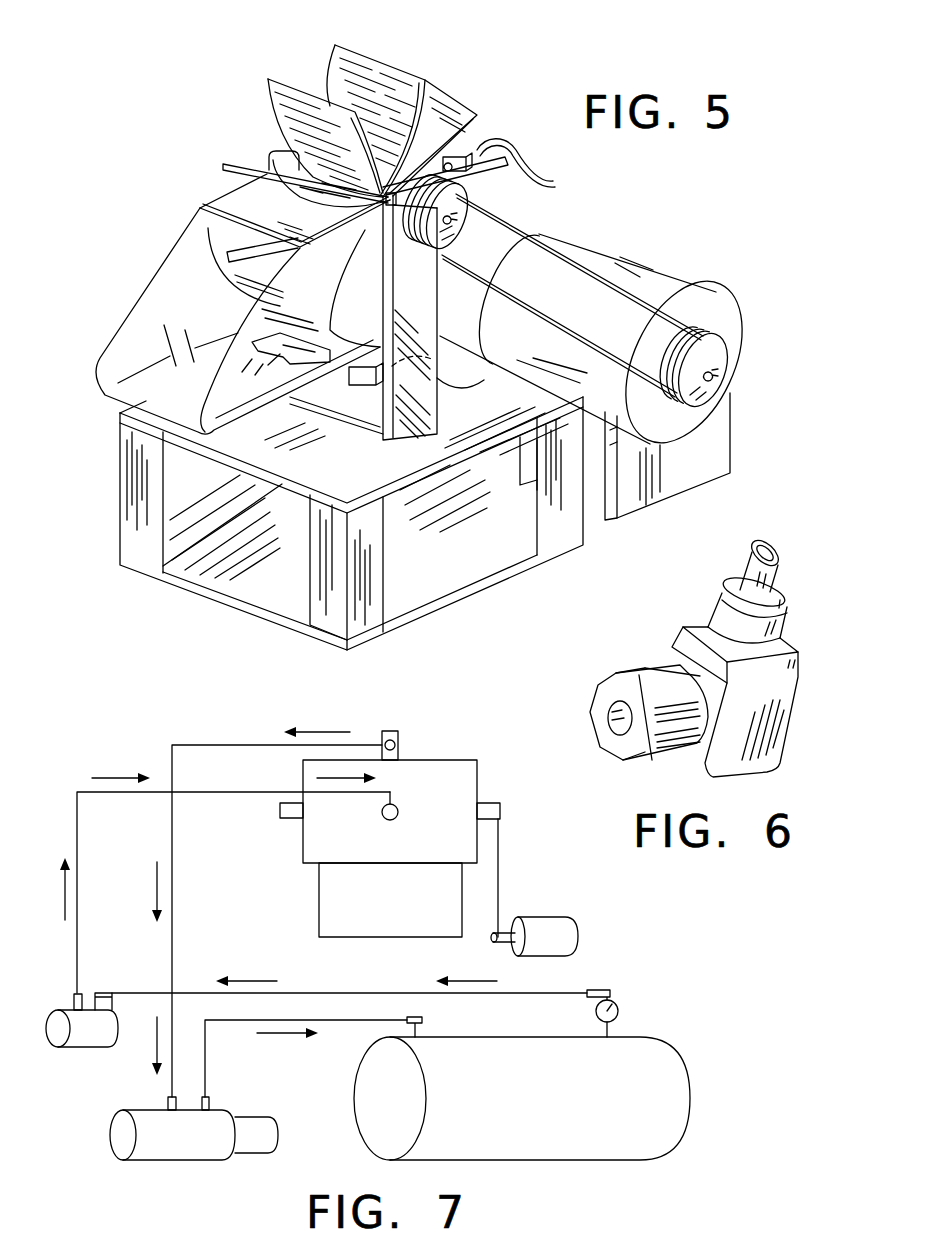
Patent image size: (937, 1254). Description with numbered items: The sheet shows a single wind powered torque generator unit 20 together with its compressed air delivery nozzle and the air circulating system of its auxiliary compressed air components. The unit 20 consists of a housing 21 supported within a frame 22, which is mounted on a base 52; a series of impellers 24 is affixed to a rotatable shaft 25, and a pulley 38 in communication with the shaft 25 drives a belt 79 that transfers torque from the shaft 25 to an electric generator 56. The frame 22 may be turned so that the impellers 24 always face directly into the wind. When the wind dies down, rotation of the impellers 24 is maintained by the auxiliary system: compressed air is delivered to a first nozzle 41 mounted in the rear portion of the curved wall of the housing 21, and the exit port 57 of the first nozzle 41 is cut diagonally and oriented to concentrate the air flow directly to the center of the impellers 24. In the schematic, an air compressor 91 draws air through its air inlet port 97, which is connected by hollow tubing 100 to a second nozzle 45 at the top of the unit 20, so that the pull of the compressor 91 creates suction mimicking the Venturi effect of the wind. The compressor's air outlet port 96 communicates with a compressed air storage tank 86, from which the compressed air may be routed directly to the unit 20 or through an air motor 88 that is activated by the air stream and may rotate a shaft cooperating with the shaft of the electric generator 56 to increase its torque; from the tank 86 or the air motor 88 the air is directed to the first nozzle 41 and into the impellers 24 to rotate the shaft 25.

In FIG. 5, the wind powered torque generator unit 20 is at (178, 117).
In FIG. 7, the wind powered torque generator unit 20 is at (318, 843).
In FIG. 5, the housing 21 is at (165, 280).
In FIG. 5, the frame 22 is at (430, 293).
In FIG. 5, the impellers 24 is at (333, 82).
In FIG. 5, the rotatable shaft 25 is at (458, 248).
In FIG. 7, the rotatable shaft 25 is at (490, 804).
In FIG. 5, the pulley 38 is at (459, 193).
In FIG. 6, the first nozzle 41 is at (775, 730).
In FIG. 7, the first nozzle 41 is at (398, 813).
In FIG. 7, the second nozzle 45 is at (392, 731).
In FIG. 5, the base 52 is at (98, 478).
In FIG. 5, the electric generator 56 is at (718, 310).
In FIG. 7, the electric generator 56 is at (576, 937).
In FIG. 6, the exit port 57 is at (785, 538).
In FIG. 5, the belt 79 is at (600, 268).
In FIG. 7, the belt 79 is at (500, 852).
In FIG. 7, the compressed air storage tank 86 is at (670, 1087).
In FIG. 7, the air motor 88 is at (80, 1037).
In FIG. 7, the air compressor 91 is at (181, 1147).
In FIG. 7, the air outlet port 96 is at (211, 1100).
In FIG. 7, the air inlet port 97 is at (168, 1100).
In FIG. 7, the hollow tubing 100 is at (268, 745).